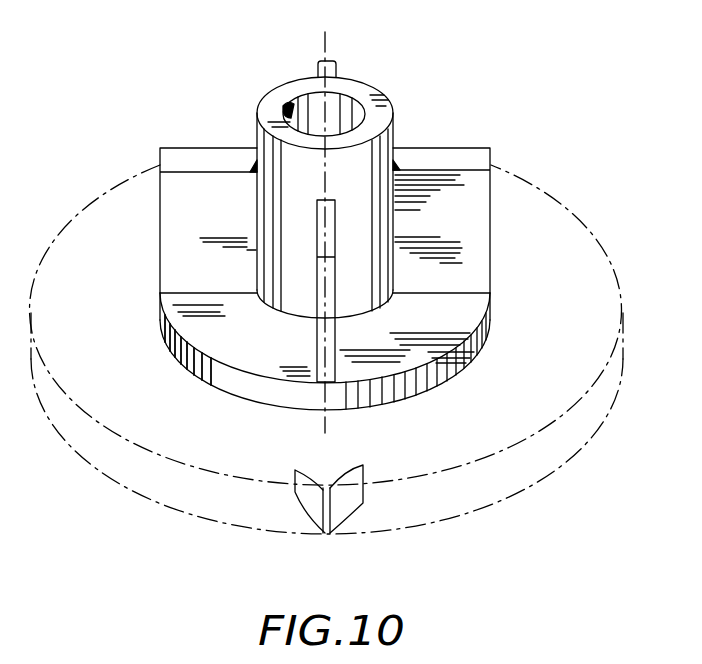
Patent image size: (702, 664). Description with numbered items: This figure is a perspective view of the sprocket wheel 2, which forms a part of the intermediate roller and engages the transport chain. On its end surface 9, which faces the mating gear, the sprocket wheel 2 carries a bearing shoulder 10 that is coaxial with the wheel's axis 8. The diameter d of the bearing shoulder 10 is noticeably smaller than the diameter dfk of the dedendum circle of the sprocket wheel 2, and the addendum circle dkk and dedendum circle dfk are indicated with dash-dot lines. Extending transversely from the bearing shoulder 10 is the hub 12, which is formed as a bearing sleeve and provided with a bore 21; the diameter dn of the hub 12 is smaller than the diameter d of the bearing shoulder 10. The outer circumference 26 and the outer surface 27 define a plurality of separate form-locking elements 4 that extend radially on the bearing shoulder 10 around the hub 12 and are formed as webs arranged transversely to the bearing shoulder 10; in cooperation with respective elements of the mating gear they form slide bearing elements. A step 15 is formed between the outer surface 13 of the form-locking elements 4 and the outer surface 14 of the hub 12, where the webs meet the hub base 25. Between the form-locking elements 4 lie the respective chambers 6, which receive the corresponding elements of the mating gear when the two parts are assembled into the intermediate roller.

The sprocket wheel 2 is at (181, 545).
The form-locking elements 4 is at (341, 70).
The chambers 6 is at (489, 306).
The axis 8 is at (323, 44).
The end surface 9 is at (576, 394).
The bearing shoulder 10 is at (178, 349).
The hub 12 is at (388, 100).
The outer surface of the form-locking elements 13 is at (172, 152).
The outer surface of the hub 14 is at (386, 122).
The step 15 is at (255, 160).
The bore 21 is at (285, 112).
The hub base 25 is at (383, 297).
The outer circumference 26 is at (468, 355).
The outer surface 27 is at (491, 230).
The diameter of the hub dn is at (284, 97).
The diameter of the bearing shoulder d is at (223, 360).
The dedendum circle diameter dfk is at (284, 452).
The addendum circle diameter dkk is at (333, 535).